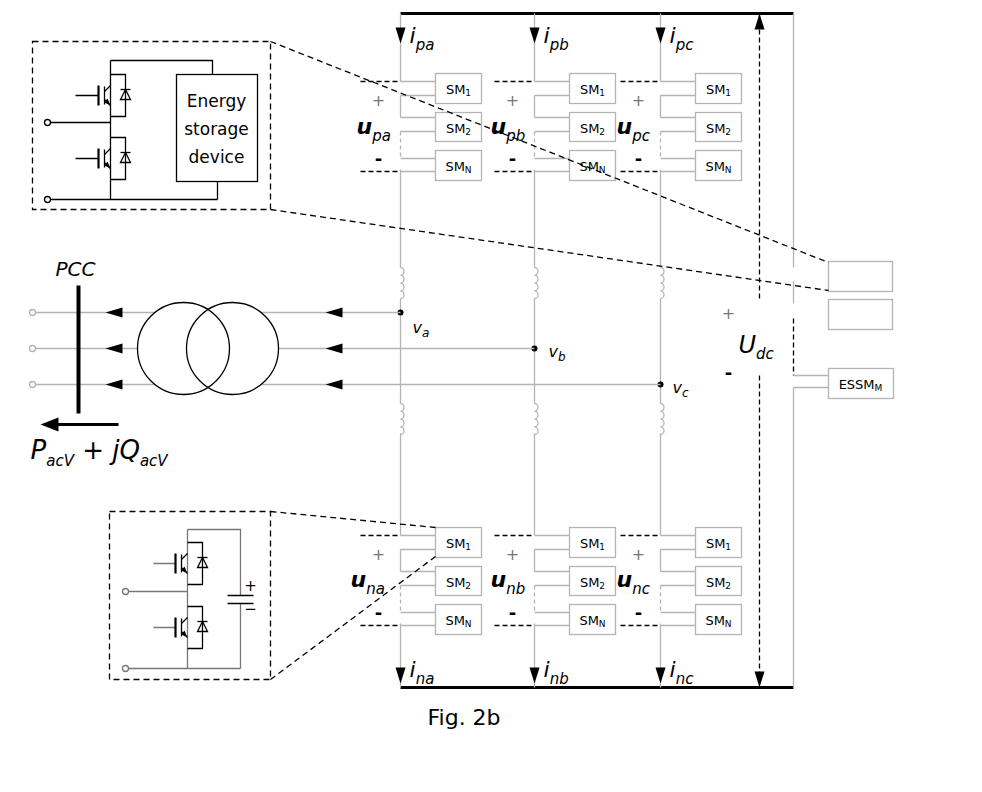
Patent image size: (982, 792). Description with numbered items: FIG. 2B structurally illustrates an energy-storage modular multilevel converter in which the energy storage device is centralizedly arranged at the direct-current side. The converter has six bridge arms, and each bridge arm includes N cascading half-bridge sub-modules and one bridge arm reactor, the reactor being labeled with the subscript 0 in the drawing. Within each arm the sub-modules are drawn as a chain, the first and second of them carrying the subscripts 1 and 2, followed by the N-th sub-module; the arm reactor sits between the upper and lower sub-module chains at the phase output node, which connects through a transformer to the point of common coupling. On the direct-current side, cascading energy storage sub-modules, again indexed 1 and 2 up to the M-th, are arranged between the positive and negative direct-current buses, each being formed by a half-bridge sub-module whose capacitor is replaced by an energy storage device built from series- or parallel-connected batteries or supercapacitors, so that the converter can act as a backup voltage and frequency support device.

The arm inductor L0 0 is at (549, 355).
The energy storage submodule ESSM1 1 is at (793, 267).
The energy storage submodule ESSM2 2 is at (793, 303).